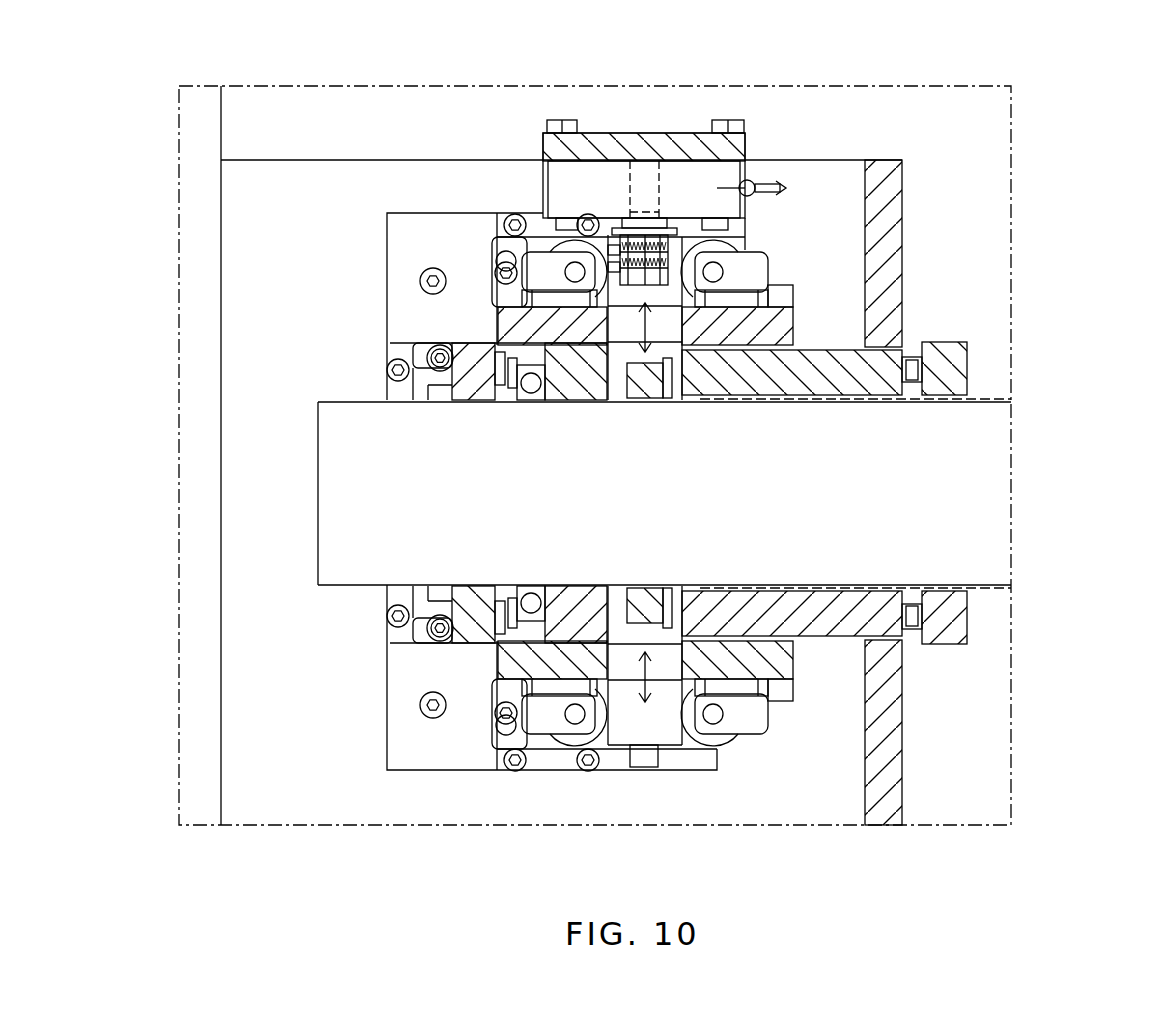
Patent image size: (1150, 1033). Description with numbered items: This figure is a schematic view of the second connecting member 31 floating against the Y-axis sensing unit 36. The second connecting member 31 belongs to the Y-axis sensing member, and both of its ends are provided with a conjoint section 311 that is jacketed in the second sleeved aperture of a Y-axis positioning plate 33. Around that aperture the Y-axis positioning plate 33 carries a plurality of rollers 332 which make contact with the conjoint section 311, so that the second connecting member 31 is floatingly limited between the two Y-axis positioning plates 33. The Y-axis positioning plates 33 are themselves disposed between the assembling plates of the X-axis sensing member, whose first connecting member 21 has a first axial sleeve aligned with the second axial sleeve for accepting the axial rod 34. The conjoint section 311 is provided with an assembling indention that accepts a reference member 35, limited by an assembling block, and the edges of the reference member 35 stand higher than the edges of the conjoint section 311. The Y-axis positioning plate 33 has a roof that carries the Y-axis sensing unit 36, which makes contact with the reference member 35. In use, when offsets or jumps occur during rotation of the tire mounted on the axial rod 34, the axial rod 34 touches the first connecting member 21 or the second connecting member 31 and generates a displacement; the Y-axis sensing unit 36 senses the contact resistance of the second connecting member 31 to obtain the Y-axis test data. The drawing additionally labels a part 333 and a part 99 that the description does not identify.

The first connecting member 21 is at (507, 357).
The second connecting member 31 is at (667, 323).
The conjoint section 311 is at (672, 262).
The Y-axis positioning plate 33 is at (523, 327).
The rollers 332 is at (565, 260).
The mounting plate 333 is at (735, 148).
The axial rod 34 is at (357, 477).
The reference member 35 is at (650, 216).
The Y-axis sensing unit 36 is at (717, 188).
The support frame 99 is at (840, 367).